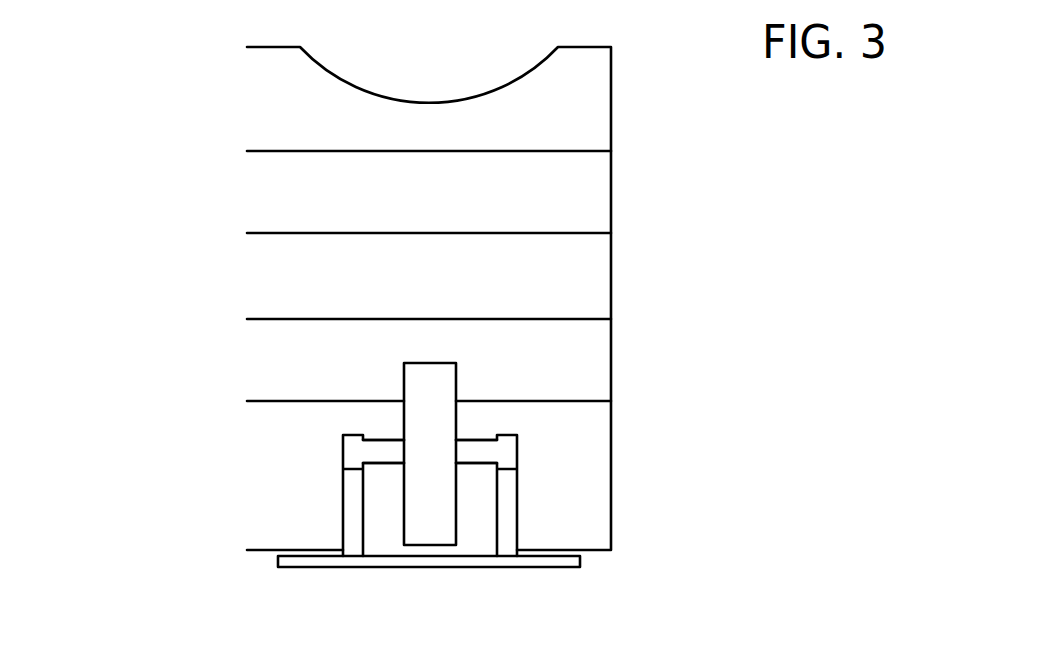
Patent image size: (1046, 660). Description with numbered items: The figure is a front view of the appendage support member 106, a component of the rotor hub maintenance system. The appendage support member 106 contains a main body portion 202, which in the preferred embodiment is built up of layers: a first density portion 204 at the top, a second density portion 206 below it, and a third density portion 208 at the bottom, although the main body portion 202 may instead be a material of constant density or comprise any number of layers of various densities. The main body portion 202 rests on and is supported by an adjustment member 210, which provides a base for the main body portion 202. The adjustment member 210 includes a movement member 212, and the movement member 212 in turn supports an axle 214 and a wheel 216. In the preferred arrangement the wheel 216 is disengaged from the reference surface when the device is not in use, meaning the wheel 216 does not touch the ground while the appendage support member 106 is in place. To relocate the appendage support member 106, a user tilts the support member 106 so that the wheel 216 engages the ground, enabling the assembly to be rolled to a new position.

The appendage support member 106 is at (150, 135).
The main body portion 202 is at (197, 282).
The first density portion 204 is at (611, 112).
The second density portion 206 is at (611, 202).
The third density portion 208 is at (611, 475).
The adjustment member 210 is at (621, 607).
The movement member 212 is at (279, 567).
The axle 214 is at (376, 463).
The wheel 216 is at (456, 507).